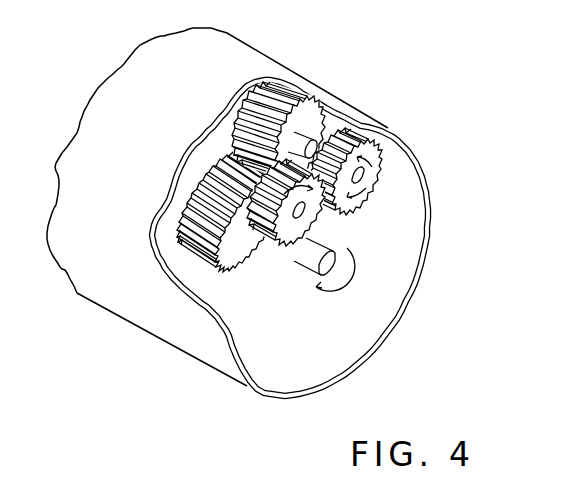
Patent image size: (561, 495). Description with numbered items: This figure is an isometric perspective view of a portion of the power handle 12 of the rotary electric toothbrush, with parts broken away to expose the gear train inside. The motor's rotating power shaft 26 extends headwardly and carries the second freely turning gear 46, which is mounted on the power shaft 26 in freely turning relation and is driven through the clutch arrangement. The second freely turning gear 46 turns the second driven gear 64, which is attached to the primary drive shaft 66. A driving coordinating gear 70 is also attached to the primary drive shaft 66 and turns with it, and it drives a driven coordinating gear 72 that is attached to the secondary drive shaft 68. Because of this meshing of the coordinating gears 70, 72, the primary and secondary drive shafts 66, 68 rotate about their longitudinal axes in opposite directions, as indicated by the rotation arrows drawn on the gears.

The power handle 12 is at (90, 297).
The power shaft 26 is at (317, 263).
The second freely turning gear 46 is at (207, 260).
The second driven gear 64 is at (297, 97).
The primary drive shaft 66 is at (247, 90).
The secondary drive shaft 68 is at (181, 246).
The driving coordinating gear 70 is at (363, 130).
The driven coordinating gear 72 is at (318, 217).